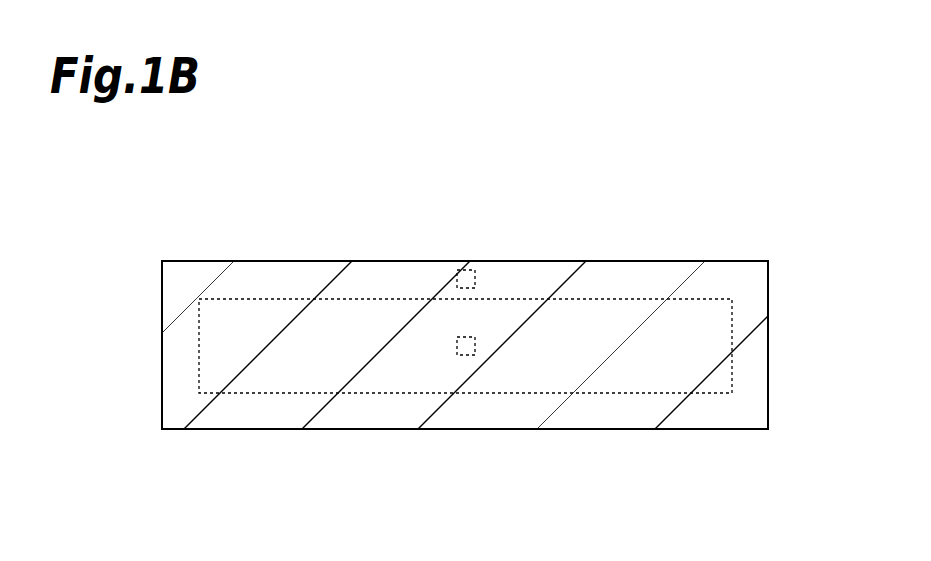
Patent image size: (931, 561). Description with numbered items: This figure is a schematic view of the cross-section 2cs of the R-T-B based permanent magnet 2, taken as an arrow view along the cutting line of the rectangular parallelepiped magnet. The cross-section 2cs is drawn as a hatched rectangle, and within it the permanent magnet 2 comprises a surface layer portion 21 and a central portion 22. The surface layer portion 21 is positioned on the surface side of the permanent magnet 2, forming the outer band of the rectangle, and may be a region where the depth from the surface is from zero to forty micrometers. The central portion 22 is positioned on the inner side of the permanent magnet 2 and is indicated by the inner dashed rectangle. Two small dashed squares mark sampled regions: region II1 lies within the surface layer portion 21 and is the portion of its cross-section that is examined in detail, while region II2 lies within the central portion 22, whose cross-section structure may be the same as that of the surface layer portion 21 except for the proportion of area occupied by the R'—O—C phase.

The permanent magnet 2 is at (465, 397).
The surface layer portion 21 is at (247, 412).
The central portion 22 is at (317, 355).
The cross-section 2cs is at (481, 342).
The region II1 is at (466, 270).
The region II2 is at (468, 356).